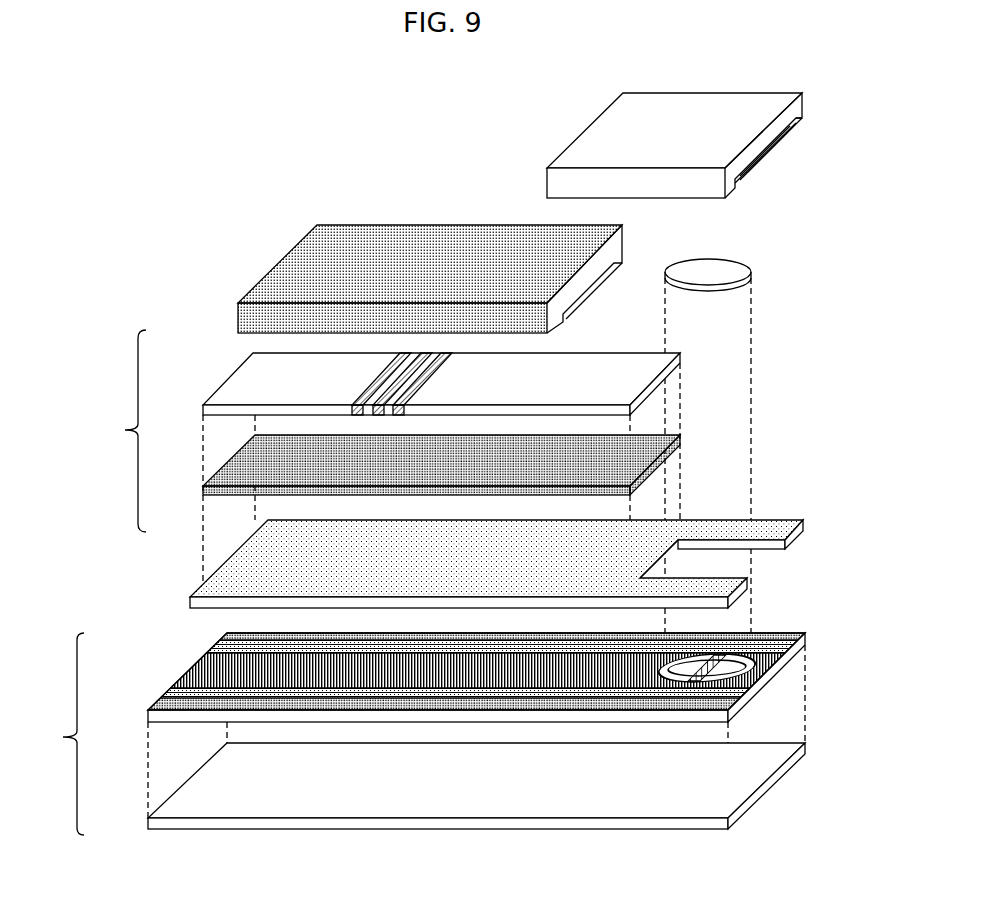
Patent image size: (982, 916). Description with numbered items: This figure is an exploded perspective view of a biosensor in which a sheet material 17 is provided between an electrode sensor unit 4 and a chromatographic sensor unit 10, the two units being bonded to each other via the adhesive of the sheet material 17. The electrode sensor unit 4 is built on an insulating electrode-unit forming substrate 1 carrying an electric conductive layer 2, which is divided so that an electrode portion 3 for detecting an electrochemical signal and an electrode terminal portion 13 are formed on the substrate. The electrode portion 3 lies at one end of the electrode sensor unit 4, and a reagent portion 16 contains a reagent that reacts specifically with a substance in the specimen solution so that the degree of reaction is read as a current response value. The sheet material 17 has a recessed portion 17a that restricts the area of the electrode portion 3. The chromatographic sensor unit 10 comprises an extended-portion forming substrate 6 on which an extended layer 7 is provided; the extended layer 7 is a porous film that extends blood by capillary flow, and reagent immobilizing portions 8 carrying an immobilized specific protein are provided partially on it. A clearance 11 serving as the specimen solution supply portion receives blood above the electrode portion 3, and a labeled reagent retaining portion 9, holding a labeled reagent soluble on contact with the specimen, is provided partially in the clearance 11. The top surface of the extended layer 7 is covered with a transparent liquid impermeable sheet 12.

The electrode-unit forming substrate 1 is at (148, 819).
The electric conductive layer 2 is at (200, 657).
The electrode portion 3 is at (793, 617).
The electrode sensor unit 4 is at (62, 734).
The extended-portion forming substrate 6 is at (228, 473).
The extended layer 7 is at (422, 366).
The reagent immobilizing portions 8 is at (443, 353).
The labeled reagent retaining portion 9 is at (753, 157).
The chromatographic sensor unit 10 is at (450, 284).
The clearance 11 is at (797, 127).
The transparent liquid impermeable sheet 12 is at (453, 237).
The electrode terminal portion 13 is at (162, 697).
The reagent portion 16 is at (743, 273).
The sheet material 17 is at (481, 544).
The recessed portion 17a is at (703, 565).